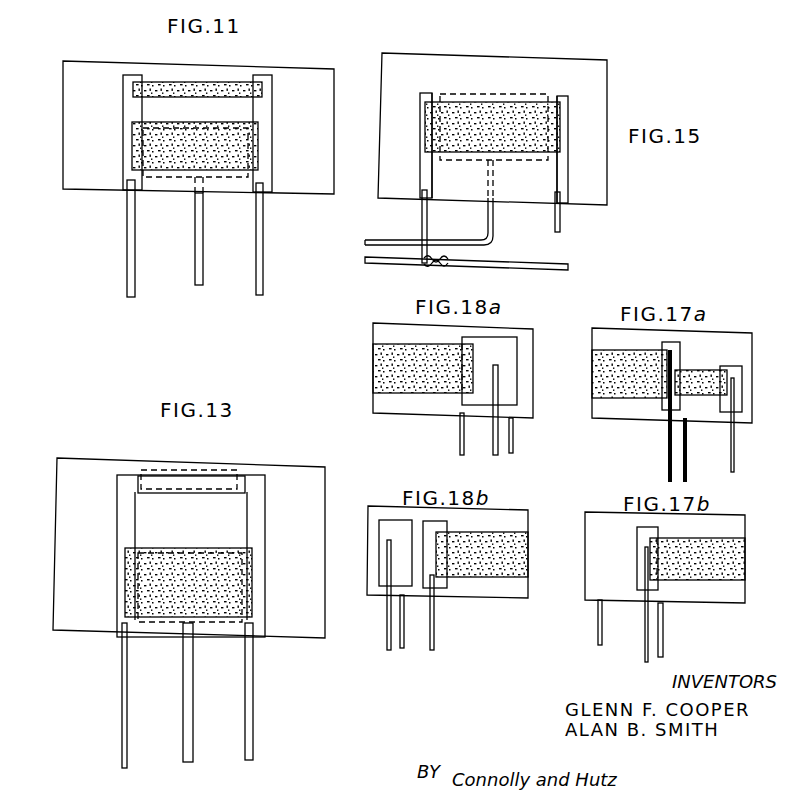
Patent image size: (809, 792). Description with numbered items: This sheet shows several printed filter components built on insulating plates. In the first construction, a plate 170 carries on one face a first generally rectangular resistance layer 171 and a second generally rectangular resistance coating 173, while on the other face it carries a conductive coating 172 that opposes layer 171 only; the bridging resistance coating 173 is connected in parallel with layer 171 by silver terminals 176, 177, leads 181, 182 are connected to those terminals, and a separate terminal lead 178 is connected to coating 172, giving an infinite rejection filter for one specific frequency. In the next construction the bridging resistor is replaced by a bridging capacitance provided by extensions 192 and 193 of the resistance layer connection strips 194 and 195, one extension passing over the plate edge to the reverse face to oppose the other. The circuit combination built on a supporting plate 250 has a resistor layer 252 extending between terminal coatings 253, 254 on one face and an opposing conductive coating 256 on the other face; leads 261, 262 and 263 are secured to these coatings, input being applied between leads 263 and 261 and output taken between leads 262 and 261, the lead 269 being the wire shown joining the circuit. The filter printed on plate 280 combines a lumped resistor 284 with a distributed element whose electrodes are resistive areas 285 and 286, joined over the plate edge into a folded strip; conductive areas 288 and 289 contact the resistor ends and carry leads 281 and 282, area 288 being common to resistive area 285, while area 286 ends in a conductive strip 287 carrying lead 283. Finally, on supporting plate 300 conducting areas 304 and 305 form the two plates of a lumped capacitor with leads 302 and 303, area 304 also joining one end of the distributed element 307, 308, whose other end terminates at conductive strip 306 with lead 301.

In FIG. 11, the plate 170 is at (313, 186).
In FIG. 11, the first resistance layer 171 is at (233, 160).
In FIG. 11, the conductive coating 172 is at (160, 177).
In FIG. 11, the second resistance coating 173 is at (240, 84).
In FIG. 11, the silver terminal 176 is at (128, 170).
In FIG. 11, the silver terminal 177 is at (267, 170).
In FIG. 11, the terminal lead 178 is at (203, 262).
In FIG. 11, the lead 181 is at (127, 281).
In FIG. 11, the lead 182 is at (263, 280).
In FIG. 13, the extension 192 is at (162, 480).
In FIG. 13, the extension 193 is at (222, 475).
In FIG. 13, the resistance layer connection strip 194 is at (117, 519).
In FIG. 13, the resistance layer connection strip 195 is at (260, 533).
In FIG. 15, the supporting plate 250 is at (575, 65).
In FIG. 15, the resistor layer 252 is at (488, 105).
In FIG. 15, the terminal coating 253 is at (428, 172).
In FIG. 15, the terminal coating 254 is at (563, 182).
In FIG. 15, the conductive coating 256 is at (458, 93).
In FIG. 15, the lead 261 is at (420, 207).
In FIG. 15, the lead 262 is at (555, 225).
In FIG. 15, the lead 263 is at (494, 215).
In FIG. 15, the twisted wire 269 is at (502, 265).
In FIG. 17a, the plate 280 is at (625, 422).
In FIG. 17b, the plate 280 is at (710, 603).
In FIG. 17a, the lead 281 is at (667, 458).
In FIG. 17b, the lead 281 is at (665, 645).
In FIG. 17a, the lead 282 is at (735, 445).
In FIG. 17b, the lead 282 is at (600, 635).
In FIG. 17a, the lead 283 is at (688, 460).
In FIG. 17b, the lead 283 is at (645, 648).
In FIG. 17a, the lumped resistor 284 is at (700, 372).
In FIG. 17a, the resistive area 285 is at (612, 365).
In FIG. 17b, the resistive area 286 is at (728, 540).
In FIG. 17b, the conductive strip 287 is at (637, 537).
In FIG. 17a, the conductive area 288 is at (683, 352).
In FIG. 17a, the conductive area 289 is at (723, 408).
In FIG. 18a, the supporting plate 300 is at (396, 413).
In FIG. 18b, the supporting plate 300 is at (503, 598).
In FIG. 18a, the lead 301 is at (460, 449).
In FIG. 18b, the lead 301 is at (436, 640).
In FIG. 18a, the lead 302 is at (498, 450).
In FIG. 18b, the lead 302 is at (405, 642).
In FIG. 18a, the lead 303 is at (513, 440).
In FIG. 18b, the lead 303 is at (387, 643).
In FIG. 18a, the conducting area 304 is at (505, 345).
In FIG. 18b, the conducting area 305 is at (388, 523).
In FIG. 18b, the conductive strip 306 is at (440, 586).
In FIG. 18b, the distributed element 307 is at (510, 567).
In FIG. 18a, the distributed element 308 is at (378, 375).